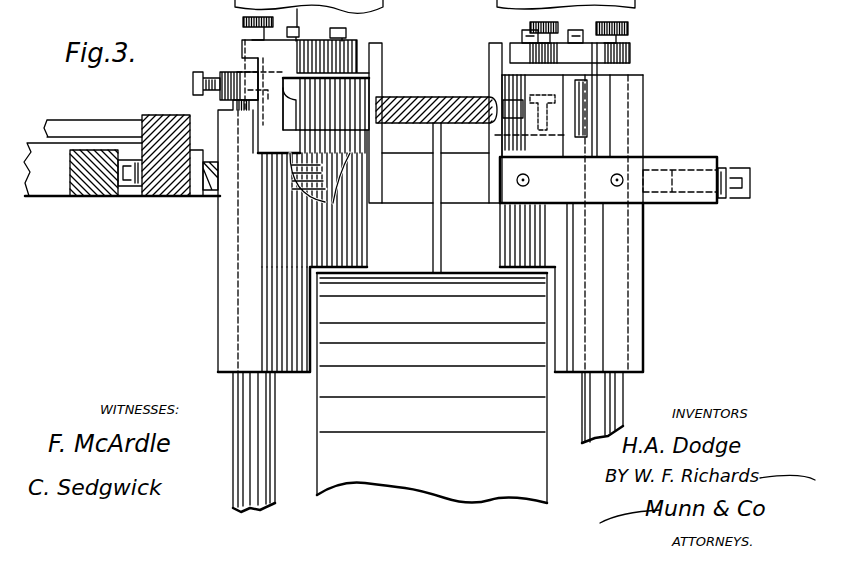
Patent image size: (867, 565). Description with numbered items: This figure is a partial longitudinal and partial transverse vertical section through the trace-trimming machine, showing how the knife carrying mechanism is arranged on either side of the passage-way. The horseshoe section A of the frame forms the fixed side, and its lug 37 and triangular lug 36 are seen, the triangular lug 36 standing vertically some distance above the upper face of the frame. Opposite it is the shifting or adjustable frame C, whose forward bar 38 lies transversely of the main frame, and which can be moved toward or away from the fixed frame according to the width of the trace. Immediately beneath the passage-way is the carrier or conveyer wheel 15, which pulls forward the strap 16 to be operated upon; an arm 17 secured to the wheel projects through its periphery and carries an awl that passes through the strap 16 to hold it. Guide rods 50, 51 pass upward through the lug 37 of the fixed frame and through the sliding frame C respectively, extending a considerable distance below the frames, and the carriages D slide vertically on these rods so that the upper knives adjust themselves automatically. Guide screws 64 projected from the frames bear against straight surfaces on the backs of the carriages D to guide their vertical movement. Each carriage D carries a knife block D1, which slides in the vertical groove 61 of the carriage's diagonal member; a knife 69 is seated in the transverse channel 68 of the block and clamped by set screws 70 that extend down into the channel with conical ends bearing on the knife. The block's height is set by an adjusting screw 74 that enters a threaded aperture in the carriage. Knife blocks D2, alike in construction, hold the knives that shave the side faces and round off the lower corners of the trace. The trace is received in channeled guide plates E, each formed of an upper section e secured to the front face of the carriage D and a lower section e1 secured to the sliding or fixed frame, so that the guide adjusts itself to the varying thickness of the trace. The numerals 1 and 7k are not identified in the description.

The bed 1 is at (122, 169).
The shifting or adjustable frame C is at (129, 125).
The forward bar 38 is at (183, 119).
The guide screw 64 is at (129, 190).
The third lug 37 is at (199, 74).
The carriage D is at (226, 270).
The vertical groove 61 is at (285, 312).
The transverse channel 68 is at (306, 82).
The knife 69 is at (326, 104).
The knife block D1 is at (301, 38).
The adjusting screw 74 is at (243, 23).
The set screw 70 is at (347, 35).
The upper section e is at (382, 80).
The strap 16 is at (473, 91).
The channeled plate E is at (407, 141).
The frame member 7k is at (482, 126).
The lower section e1 is at (489, 194).
The arm 17 is at (433, 167).
The horseshoe section A is at (589, 173).
The knife block D2 is at (563, 75).
The triangular lug 36 is at (541, 116).
The carrier or conveyer wheel 15 is at (432, 388).
The guide rod 51 is at (262, 416).
The guide rod 50 is at (615, 401).